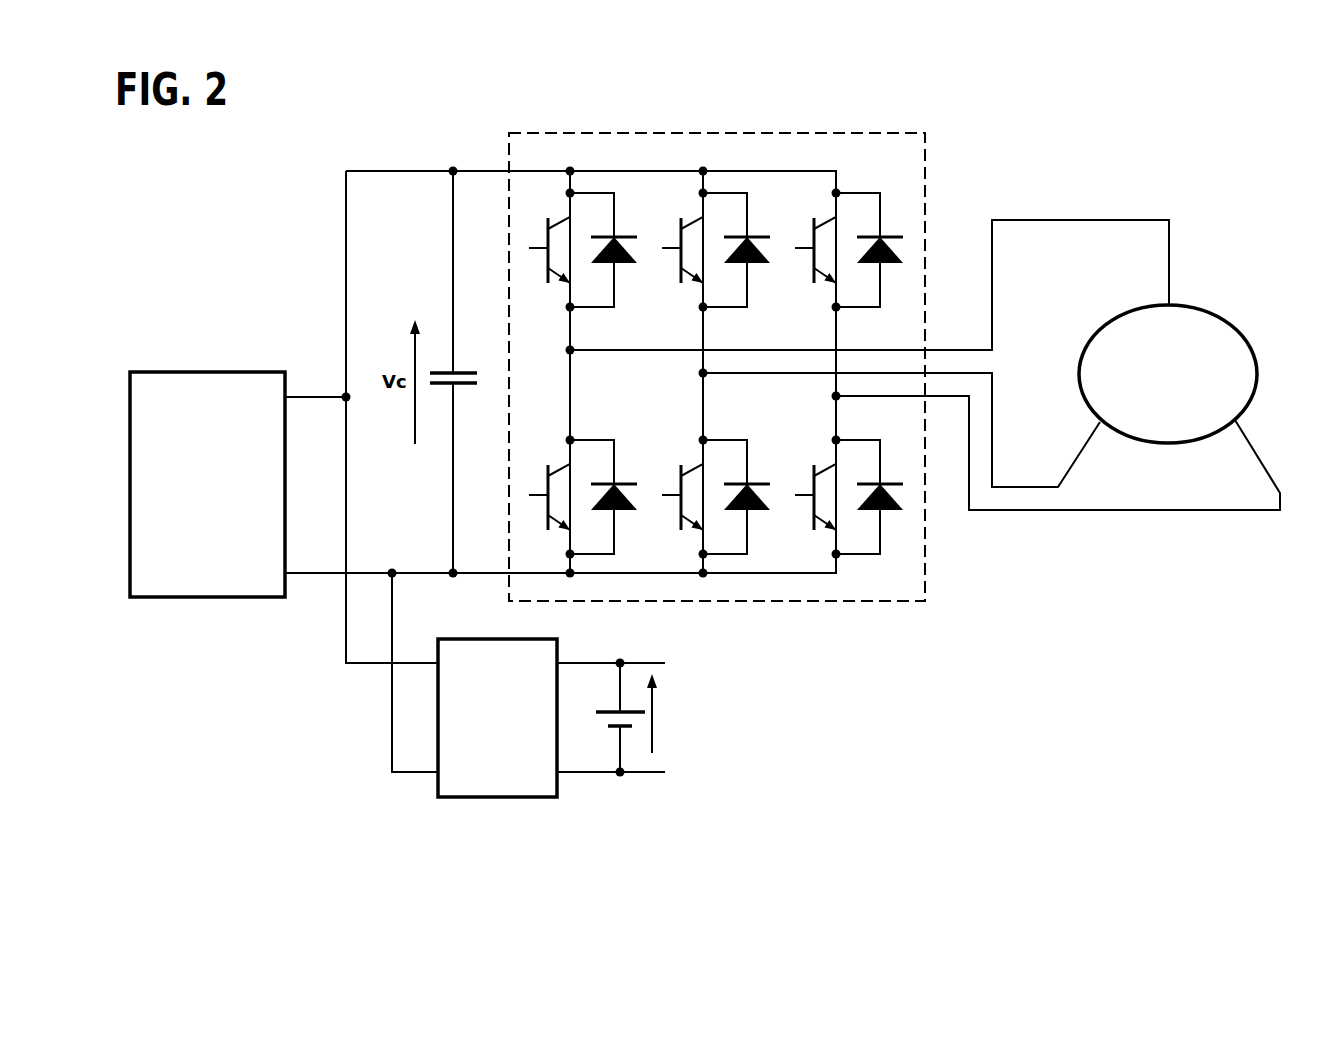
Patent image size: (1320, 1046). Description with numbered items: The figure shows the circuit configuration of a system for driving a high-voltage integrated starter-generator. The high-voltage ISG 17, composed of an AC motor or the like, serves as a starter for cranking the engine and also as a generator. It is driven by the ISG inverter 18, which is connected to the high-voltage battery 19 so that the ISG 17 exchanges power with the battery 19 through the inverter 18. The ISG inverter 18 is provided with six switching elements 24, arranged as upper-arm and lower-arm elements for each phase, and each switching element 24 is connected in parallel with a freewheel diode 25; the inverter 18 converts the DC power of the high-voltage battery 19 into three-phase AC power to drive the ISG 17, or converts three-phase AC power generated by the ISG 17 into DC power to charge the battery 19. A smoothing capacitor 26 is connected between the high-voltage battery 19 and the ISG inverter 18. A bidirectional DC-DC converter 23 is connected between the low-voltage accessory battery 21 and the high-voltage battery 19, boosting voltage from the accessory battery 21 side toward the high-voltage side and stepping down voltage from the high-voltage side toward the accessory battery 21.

The high-voltage integrated starter-generator (ISG) 17 is at (1228, 320).
The ISG inverter 18 is at (804, 133).
The high-voltage battery 19 is at (205, 372).
The accessory battery 21 is at (631, 728).
The bidirectional DC-DC converter 23 is at (494, 797).
The switching element 24 is at (548, 272).
The freewheel diode 25 is at (633, 253).
The smoothing capacitor 26 is at (468, 370).